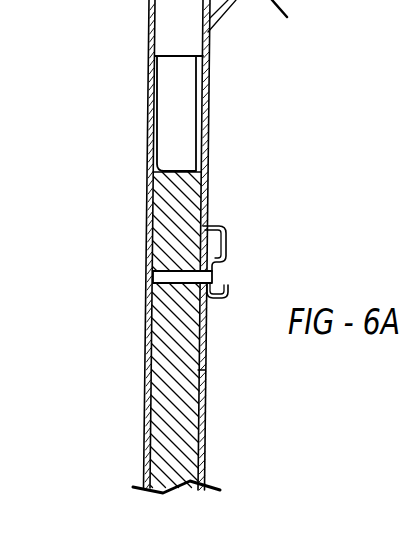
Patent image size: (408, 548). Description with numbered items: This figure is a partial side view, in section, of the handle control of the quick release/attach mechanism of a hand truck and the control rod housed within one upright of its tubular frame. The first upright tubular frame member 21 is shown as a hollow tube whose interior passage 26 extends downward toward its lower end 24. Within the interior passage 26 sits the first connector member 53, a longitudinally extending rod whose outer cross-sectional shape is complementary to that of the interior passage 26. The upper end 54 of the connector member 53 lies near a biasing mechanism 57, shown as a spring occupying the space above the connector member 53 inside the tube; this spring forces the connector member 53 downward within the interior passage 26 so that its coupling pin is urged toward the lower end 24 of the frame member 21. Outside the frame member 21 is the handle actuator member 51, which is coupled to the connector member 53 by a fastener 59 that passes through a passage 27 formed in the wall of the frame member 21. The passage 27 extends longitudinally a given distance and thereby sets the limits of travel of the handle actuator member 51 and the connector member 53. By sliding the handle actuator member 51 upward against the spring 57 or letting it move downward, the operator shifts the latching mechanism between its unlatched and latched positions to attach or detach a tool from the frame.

The first upright tubular frame member 21 is at (206, 98).
The lower end of first upright tubular frame member 24 is at (396, 16).
The interior passage 26 is at (165, 103).
The passage 27 is at (205, 303).
The handle actuator member 51 is at (229, 287).
The first connector member 53 is at (193, 201).
The upper end of connector member 54 is at (172, 170).
The biasing mechanism 57 is at (193, 77).
The fastener 59 is at (173, 282).